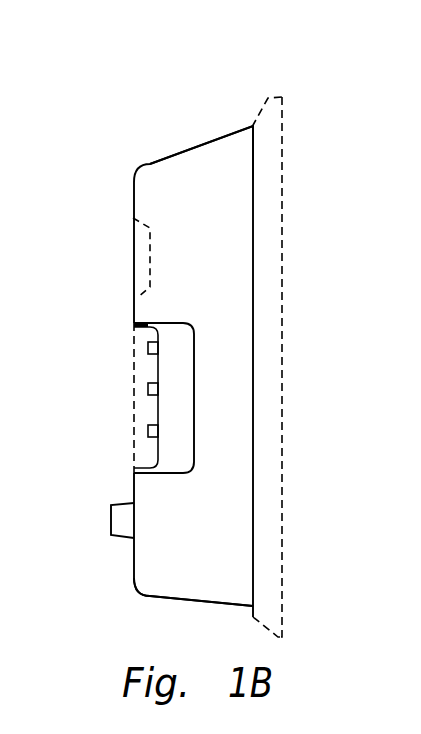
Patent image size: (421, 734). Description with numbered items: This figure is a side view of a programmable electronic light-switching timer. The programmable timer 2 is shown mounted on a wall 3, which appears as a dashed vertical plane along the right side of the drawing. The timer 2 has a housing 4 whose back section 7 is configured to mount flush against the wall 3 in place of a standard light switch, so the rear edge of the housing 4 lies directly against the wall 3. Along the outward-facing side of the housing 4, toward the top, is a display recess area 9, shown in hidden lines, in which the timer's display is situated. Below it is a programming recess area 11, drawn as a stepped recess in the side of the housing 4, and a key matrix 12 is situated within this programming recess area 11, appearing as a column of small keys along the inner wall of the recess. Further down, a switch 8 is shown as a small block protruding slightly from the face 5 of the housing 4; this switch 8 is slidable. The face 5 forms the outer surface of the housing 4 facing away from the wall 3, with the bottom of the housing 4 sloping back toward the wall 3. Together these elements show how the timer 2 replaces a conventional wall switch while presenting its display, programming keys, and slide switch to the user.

The programmable timer 2 is at (104, 126).
The wall 3 is at (282, 97).
The housing 4 is at (178, 152).
The face 5 is at (133, 567).
The back section 7 is at (252, 178).
The switch 8 is at (113, 520).
The display recess area 9 is at (145, 247).
The programming recess area 11 is at (148, 331).
The key matrix 12 is at (158, 398).